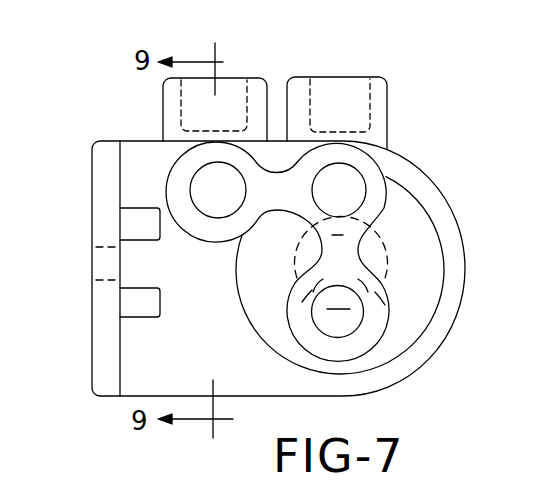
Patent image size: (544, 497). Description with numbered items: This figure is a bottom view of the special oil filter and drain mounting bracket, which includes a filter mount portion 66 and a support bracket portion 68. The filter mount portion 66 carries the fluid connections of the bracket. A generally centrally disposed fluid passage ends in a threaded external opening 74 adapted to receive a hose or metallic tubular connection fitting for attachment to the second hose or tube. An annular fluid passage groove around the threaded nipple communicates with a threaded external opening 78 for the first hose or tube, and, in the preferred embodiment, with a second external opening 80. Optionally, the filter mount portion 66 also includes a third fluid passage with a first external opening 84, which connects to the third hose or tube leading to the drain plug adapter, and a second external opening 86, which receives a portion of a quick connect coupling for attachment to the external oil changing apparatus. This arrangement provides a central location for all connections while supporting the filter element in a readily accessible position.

The filter mount portion 66 is at (514, 250).
The support bracket portion 68 is at (121, 376).
The threaded external opening 74 is at (358, 322).
The threaded external opening 78 is at (362, 186).
The second external opening 80 is at (363, 103).
The first external opening 84 is at (213, 206).
The second external opening 86 is at (188, 117).